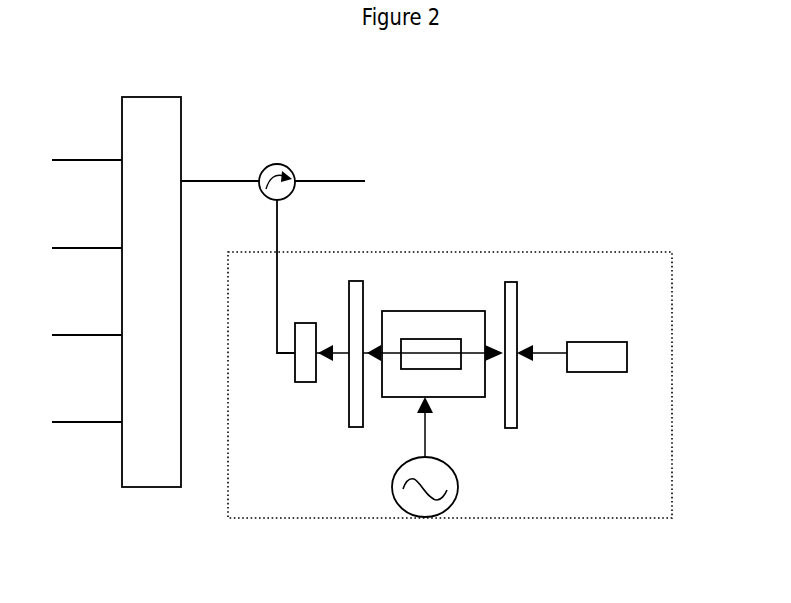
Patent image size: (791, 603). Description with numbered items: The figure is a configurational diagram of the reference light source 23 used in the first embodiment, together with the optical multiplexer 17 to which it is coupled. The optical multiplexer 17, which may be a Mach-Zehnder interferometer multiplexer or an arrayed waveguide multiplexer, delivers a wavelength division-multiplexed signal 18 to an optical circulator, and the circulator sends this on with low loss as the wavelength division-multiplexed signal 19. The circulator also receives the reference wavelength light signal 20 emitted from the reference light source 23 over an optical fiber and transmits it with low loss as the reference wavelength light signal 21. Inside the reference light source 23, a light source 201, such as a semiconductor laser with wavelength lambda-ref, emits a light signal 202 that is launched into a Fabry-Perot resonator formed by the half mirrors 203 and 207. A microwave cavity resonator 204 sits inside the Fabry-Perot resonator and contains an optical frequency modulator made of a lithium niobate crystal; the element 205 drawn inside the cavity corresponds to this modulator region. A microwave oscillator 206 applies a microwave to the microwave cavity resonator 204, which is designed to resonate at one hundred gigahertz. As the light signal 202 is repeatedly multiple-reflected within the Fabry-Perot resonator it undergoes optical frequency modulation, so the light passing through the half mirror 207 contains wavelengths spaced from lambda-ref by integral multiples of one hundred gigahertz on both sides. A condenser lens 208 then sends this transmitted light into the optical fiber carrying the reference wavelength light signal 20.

The optical multiplexer 17 is at (153, 97).
The wavelength division-multiplexed signal 18 is at (190, 181).
The wavelength division-multiplexed signal 19 is at (312, 181).
The reference wavelength light signal 20 is at (278, 232).
The reference wavelength light signal 21 is at (277, 164).
The reference light source 23 is at (590, 253).
The light source 201 is at (592, 342).
The light signal 202 is at (541, 360).
The half mirror 203 is at (518, 293).
The microwave cavity resonator 204 is at (428, 311).
The modulator waveguide 205 is at (455, 369).
The microwave oscillator 206 is at (458, 487).
The half mirror 207 is at (363, 290).
The condenser lens 208 is at (298, 382).